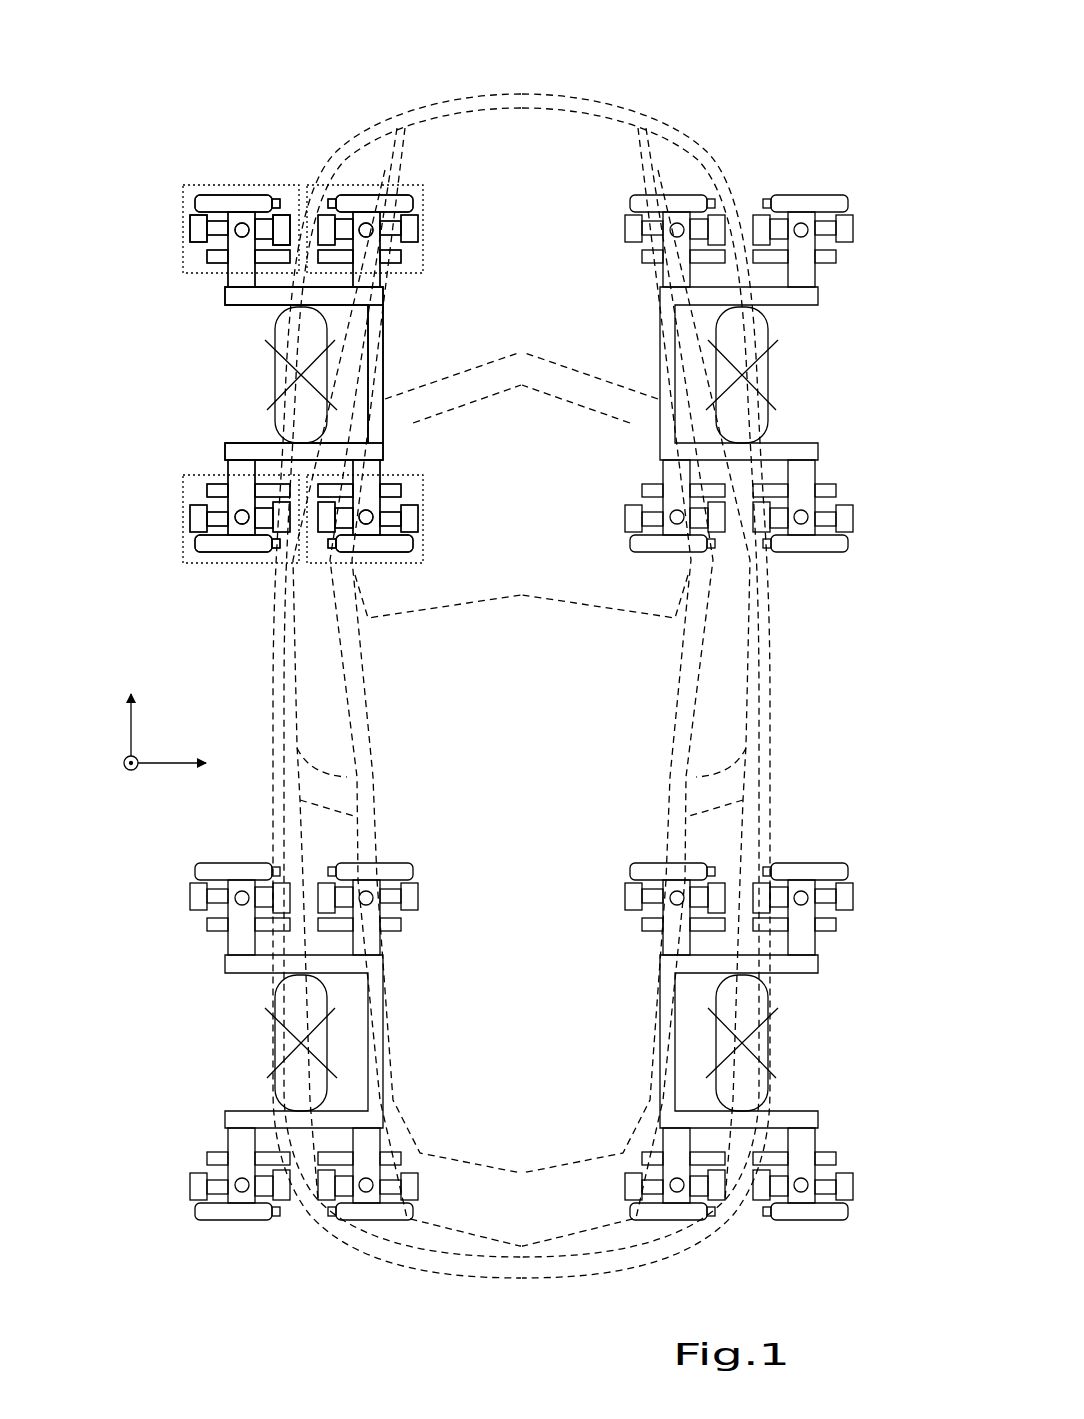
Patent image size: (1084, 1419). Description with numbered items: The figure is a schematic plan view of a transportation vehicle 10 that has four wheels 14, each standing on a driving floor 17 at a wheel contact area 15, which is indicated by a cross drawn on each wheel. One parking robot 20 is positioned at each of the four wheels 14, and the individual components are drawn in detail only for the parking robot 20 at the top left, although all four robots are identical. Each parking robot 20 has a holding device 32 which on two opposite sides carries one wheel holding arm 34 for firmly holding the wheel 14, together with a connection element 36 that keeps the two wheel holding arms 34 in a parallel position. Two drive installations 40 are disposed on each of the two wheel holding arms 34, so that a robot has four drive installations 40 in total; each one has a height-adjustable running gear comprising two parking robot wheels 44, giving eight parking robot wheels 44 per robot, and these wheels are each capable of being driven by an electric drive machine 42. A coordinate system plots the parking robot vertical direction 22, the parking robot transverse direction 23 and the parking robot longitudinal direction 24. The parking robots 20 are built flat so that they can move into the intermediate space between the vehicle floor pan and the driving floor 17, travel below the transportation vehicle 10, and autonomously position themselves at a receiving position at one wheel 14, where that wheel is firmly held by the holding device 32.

The transportation vehicle 10 is at (631, 90).
The wheel 14 is at (300, 413).
The wheel contact area 15 is at (285, 385).
The driving floor 17 is at (852, 736).
The parking robot 20 is at (153, 217).
The parking robot vertical direction 22 is at (124, 770).
The parking robot transverse direction 23 is at (165, 765).
The parking robot longitudinal direction 24 is at (131, 730).
The holding device 32 is at (380, 351).
The wheel holding arm 34 is at (235, 300).
The connection element 36 is at (375, 425).
The drive installation 40 is at (277, 183).
The electric drive machine 42 is at (278, 236).
The parking robot wheel 44 is at (287, 227).